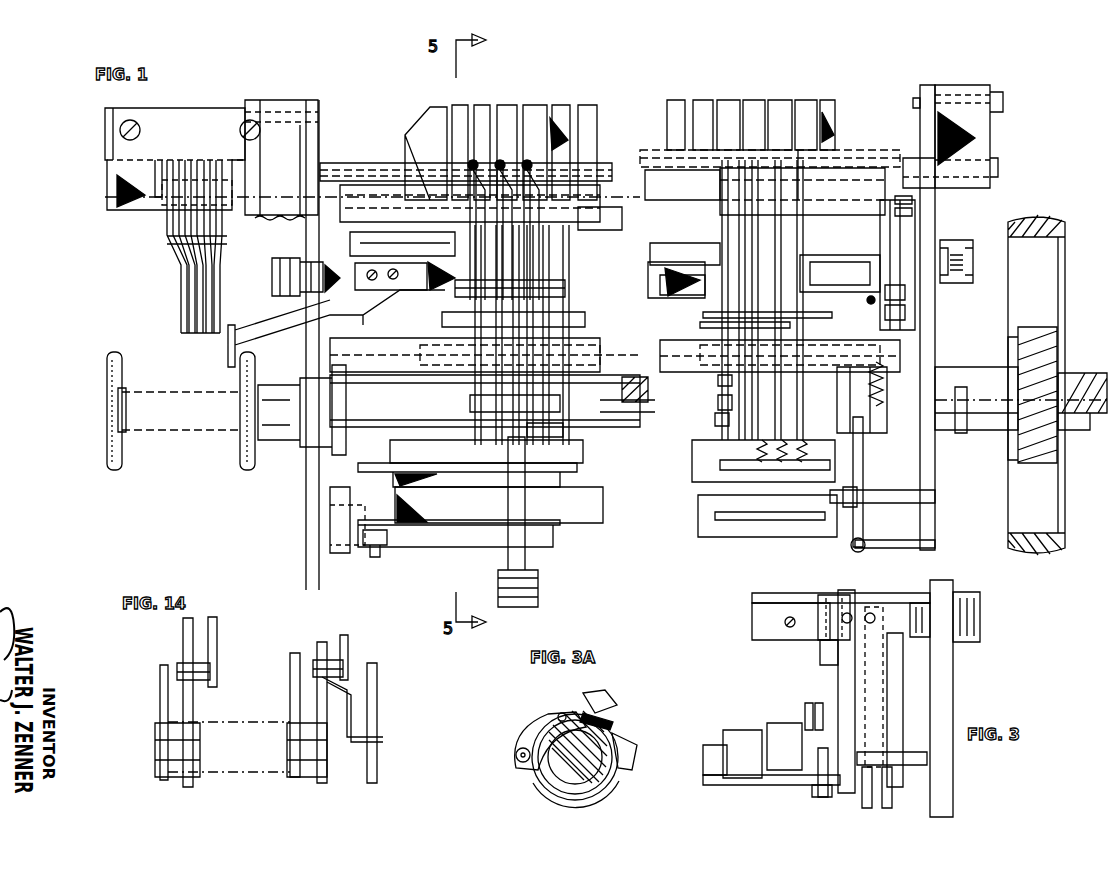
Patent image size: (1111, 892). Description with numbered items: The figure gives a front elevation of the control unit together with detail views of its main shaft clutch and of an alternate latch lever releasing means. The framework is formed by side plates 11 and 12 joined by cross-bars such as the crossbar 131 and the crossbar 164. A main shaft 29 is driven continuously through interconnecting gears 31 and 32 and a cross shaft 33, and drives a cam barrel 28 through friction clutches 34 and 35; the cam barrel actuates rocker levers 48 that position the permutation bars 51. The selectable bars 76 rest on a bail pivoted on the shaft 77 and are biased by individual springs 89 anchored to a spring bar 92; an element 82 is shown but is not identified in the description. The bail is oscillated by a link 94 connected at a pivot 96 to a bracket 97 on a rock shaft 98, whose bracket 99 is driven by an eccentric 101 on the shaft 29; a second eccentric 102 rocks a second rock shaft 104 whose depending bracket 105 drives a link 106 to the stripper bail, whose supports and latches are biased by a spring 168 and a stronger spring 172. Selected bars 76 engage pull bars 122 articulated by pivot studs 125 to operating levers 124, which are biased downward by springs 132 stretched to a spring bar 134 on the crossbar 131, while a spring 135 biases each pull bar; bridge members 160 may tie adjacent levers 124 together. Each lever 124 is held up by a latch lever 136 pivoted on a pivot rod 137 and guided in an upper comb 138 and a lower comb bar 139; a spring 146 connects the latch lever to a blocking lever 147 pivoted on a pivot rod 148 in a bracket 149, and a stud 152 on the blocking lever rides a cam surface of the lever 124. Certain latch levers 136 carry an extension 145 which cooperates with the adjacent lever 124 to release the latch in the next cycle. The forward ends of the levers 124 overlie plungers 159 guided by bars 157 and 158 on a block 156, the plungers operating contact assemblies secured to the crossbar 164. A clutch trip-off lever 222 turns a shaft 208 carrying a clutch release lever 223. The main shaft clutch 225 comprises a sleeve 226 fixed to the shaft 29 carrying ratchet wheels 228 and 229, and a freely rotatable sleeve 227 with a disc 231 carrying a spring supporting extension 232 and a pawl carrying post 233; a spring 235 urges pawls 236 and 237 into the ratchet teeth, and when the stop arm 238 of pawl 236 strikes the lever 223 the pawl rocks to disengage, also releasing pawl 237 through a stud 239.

In FIG. 1, the side plate 11 is at (306, 558).
In FIG. 1, the side plate 12 is at (935, 515).
In FIG. 3, the side plate 12 is at (953, 673).
In FIG. 1, the cam barrel 28 is at (122, 445).
In FIG. 1, the main shaft 29 is at (643, 425).
In FIG. 1, the gear 31 is at (1057, 332).
In FIG. 1, the gear 32 is at (1080, 430).
In FIG. 1, the cross shaft 33 is at (1058, 300).
In FIG. 1, the friction clutch 34 is at (115, 470).
In FIG. 1, the friction clutch 35 is at (248, 470).
In FIG. 1, the rocker lever 48 is at (215, 262).
In FIG. 1, the permutation bar 51 is at (215, 236).
In FIG. 1, the selectable bar 76 is at (740, 110).
In FIG. 1, the shaft 77 is at (652, 163).
In FIG. 1, the comb 82 is at (470, 125).
In FIG. 1, the spring 89 is at (455, 240).
In FIG. 1, the spring bar 92 is at (627, 338).
In FIG. 1, the link 94 is at (905, 200).
In FIG. 1, the pivot connection 96 is at (900, 212).
In FIG. 1, the bracket 97 is at (895, 225).
In FIG. 1, the rock shaft 98 is at (650, 260).
In FIG. 3, the rock shaft 98 is at (760, 593).
In FIG. 3, the bracket 99 is at (752, 631).
In FIG. 1, the eccentric 101 is at (870, 432).
In FIG. 3, the eccentric 101 is at (872, 805).
In FIG. 1, the eccentric 102 is at (863, 470).
In FIG. 3, the eccentric 102 is at (838, 676).
In FIG. 1, the second rock shaft 104 is at (710, 255).
In FIG. 3, the second rock shaft 104 is at (820, 595).
In FIG. 1, the depending bracket 105 is at (866, 300).
In FIG. 1, the link 106 is at (885, 312).
In FIG. 14, the pull bar 122 is at (160, 700).
In FIG. 1, the operating lever 124 is at (720, 380).
In FIG. 14, the operating lever 124 is at (195, 775).
In FIG. 1, the pivot stud 125 is at (716, 420).
In FIG. 1, the crossbar 131 is at (692, 470).
In FIG. 1, the spring 132 is at (522, 452).
In FIG. 1, the spring bar 134 is at (700, 490).
In FIG. 1, the spring 135 is at (478, 408).
In FIG. 14, the latch lever 136 is at (183, 640).
In FIG. 1, the pivot rod 137 is at (585, 228).
In FIG. 1, the upper comb 138 is at (830, 178).
In FIG. 1, the lower comb bar 139 is at (703, 315).
In FIG. 14, the extension 145 is at (365, 750).
In FIG. 1, the spring 146 is at (800, 155).
In FIG. 1, the blocking lever 147 is at (748, 120).
In FIG. 14, the blocking lever 147 is at (215, 645).
In FIG. 1, the pivot rod 148 is at (562, 288).
In FIG. 1, the bracket 149 is at (818, 265).
In FIG. 1, the stud 152 is at (720, 400).
In FIG. 14, the stud 152 is at (200, 682).
In FIG. 1, the block 156 is at (345, 520).
In FIG. 1, the bar 157 is at (580, 475).
In FIG. 1, the bar 158 is at (555, 540).
In FIG. 1, the plunger 159 is at (505, 565).
In FIG. 1, the bridge member 160 is at (565, 437).
In FIG. 1, the crossbar 164 is at (603, 530).
In FIG. 1, the spring 168 is at (900, 298).
In FIG. 1, the spring 172 is at (872, 340).
In FIG. 1, the shaft 208 is at (402, 288).
In FIG. 1, the clutch trip-off lever 222 is at (228, 345).
In FIG. 3A, the clutch release lever 223 is at (615, 700).
In FIG. 3, the clutch release lever 223 is at (825, 660).
In FIG. 3A, the main shaft clutch 225 is at (520, 790).
In FIG. 3, the main shaft clutch 225 is at (790, 790).
In FIG. 3, the sleeve 226 is at (780, 728).
In FIG. 3, the sleeve 227 is at (880, 725).
In FIG. 3, the ratchet wheel 228 is at (805, 710).
In FIG. 3, the ratchet wheel 229 is at (833, 693).
In FIG. 3, the disc 231 is at (828, 790).
In FIG. 3A, the spring supporting extension 232 is at (637, 750).
In FIG. 3, the spring supporting extension 232 is at (765, 775).
In FIG. 3A, the pawl carrying post 233 is at (515, 760).
In FIG. 3A, the spring 235 is at (615, 718).
In FIG. 3A, the pawl 236 is at (566, 718).
In FIG. 3A, the pawl 237 is at (525, 740).
In FIG. 3A, the stop arm 238 is at (592, 695).
In FIG. 3, the stop arm 238 is at (820, 795).
In FIG. 3A, the stud 239 is at (558, 715).